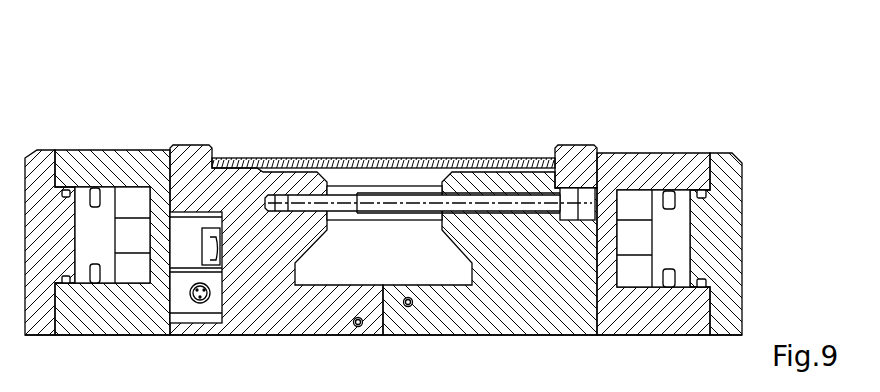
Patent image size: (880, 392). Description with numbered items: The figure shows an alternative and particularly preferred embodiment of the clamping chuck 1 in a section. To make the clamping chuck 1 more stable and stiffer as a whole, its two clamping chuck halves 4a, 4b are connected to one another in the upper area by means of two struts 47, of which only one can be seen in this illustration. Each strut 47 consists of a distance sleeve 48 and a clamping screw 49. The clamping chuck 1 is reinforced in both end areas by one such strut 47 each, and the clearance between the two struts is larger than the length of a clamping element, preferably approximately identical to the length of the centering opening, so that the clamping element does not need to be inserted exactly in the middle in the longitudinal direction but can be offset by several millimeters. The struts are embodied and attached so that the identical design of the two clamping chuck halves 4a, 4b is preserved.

The clamping chuck 1 is at (439, 181).
The clamping chuck half 4a is at (584, 100).
The clamping chuck half 4b is at (186, 108).
The strut 47 is at (417, 180).
The distance sleeve 48 is at (365, 197).
The clamping screw 49 is at (399, 188).